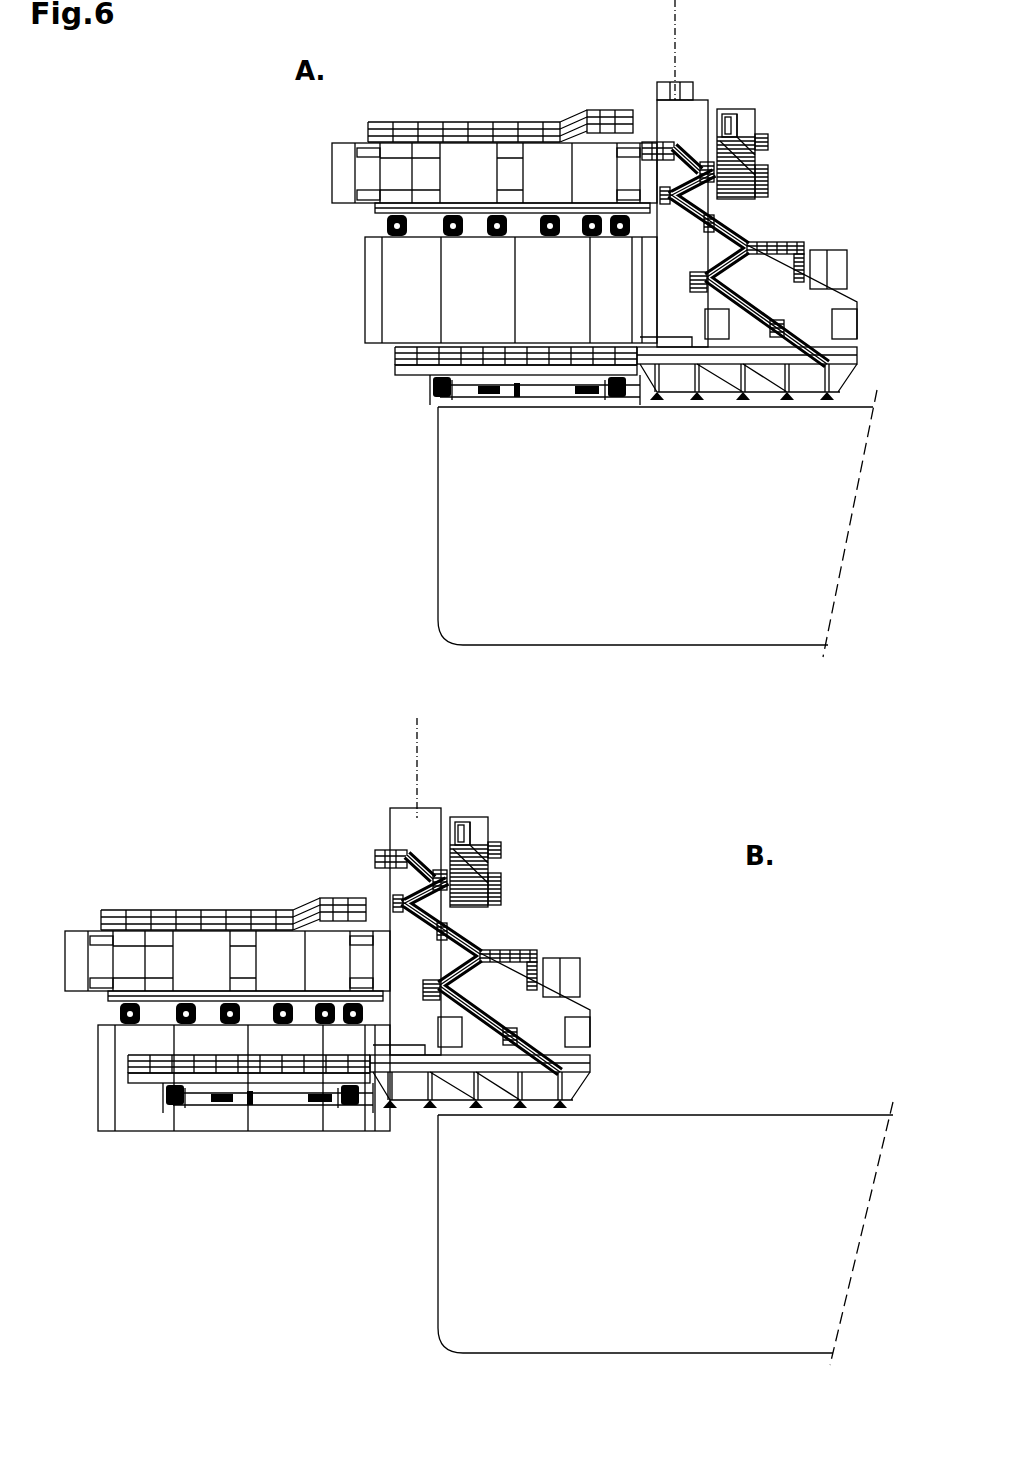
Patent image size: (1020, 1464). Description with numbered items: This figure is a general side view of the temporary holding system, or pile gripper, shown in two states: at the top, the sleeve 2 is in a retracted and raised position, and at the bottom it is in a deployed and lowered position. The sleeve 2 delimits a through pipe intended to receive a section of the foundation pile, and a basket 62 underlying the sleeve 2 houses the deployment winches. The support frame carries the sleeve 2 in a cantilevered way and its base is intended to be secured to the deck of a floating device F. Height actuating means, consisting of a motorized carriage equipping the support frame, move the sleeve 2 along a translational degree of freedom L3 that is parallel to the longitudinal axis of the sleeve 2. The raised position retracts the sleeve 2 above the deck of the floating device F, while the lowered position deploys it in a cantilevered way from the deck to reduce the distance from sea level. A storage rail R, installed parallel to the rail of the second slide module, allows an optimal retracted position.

The translational degree of freedom L3 is at (663, 29).
The sleeve 2 is at (323, 160).
The basket 62 is at (392, 283).
The storage rail R is at (769, 370).
The floating device F is at (862, 396).